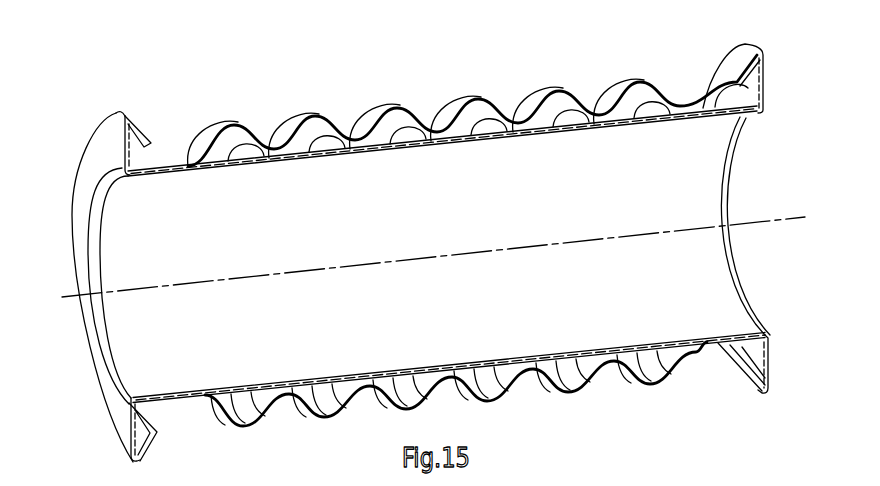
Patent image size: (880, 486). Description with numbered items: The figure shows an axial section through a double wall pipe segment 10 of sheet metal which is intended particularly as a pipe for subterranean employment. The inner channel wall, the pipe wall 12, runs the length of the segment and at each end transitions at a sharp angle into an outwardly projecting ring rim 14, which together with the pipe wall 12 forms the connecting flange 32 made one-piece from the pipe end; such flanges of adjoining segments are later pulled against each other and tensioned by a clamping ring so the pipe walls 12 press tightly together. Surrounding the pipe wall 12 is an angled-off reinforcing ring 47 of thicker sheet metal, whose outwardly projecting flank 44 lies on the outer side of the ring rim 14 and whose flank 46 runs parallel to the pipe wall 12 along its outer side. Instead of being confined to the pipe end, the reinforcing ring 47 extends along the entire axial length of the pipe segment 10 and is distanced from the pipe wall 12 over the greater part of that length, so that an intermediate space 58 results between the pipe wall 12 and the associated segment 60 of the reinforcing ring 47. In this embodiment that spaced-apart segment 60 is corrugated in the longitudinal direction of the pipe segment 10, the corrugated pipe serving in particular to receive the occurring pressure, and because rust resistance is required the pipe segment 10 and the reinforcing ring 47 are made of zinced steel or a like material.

The pipe segment 10 is at (331, 161).
The pipe wall 12 is at (543, 108).
The ring rim 14 is at (122, 150).
The connecting flange 32 is at (92, 158).
The outwardly projecting flank 44 is at (130, 153).
The flank running parallel to the pipe wall 46 is at (167, 176).
The reinforcing ring 47 is at (185, 160).
The intermediate space 58 is at (640, 102).
The segment of the reinforcing ring 60 is at (472, 100).